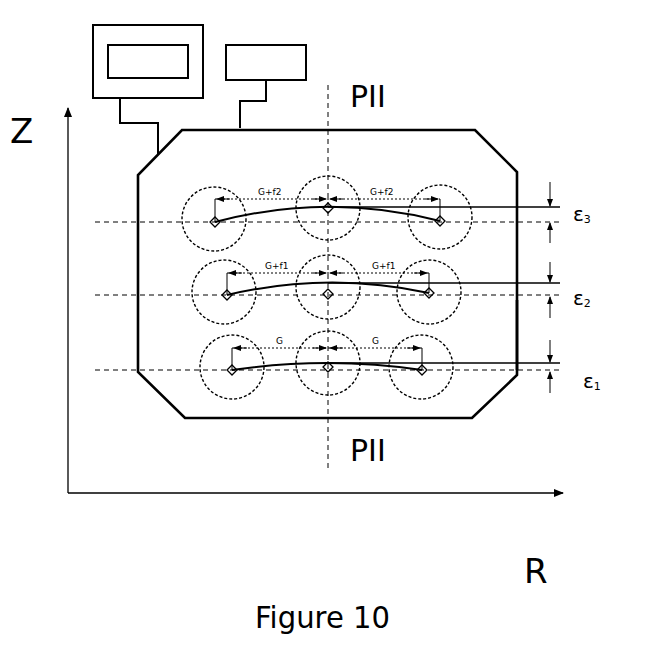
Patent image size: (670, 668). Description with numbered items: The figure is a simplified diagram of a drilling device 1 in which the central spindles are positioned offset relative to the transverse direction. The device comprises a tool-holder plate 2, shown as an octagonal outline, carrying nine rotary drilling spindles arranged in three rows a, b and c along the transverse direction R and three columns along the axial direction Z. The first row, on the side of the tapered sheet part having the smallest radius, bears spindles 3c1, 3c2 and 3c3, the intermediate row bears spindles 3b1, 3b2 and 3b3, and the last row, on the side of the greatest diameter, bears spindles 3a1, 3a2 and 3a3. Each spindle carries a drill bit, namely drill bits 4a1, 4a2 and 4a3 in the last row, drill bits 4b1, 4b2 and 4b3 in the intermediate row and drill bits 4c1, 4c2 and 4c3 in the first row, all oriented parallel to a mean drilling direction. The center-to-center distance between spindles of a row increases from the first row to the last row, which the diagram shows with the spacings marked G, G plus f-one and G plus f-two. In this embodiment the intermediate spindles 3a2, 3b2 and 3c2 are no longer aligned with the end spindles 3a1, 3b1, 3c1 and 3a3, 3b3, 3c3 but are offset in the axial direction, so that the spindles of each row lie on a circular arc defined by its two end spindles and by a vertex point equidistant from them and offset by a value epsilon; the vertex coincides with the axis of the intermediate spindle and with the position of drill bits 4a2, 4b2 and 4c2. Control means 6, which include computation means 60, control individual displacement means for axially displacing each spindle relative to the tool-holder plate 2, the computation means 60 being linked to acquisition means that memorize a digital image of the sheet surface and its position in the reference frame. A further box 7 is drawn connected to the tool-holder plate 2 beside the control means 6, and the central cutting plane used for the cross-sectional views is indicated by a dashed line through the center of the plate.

The drilling device 1 is at (594, 121).
The tool-holder plate 2 is at (518, 322).
The control means 6 is at (93, 33).
The computation means 60 is at (148, 62).
The measuring device 7 is at (266, 86).
The rotary drilling spindle 3a1 is at (196, 191).
The intermediate spindle 3a2 is at (340, 186).
The rotary drilling spindle 3a3 is at (470, 196).
The rotary drilling spindle 3b1 is at (203, 275).
The intermediate spindle 3b2 is at (301, 302).
The rotary drilling spindle 3b3 is at (459, 272).
The rotary drilling spindle 3c1 is at (207, 341).
The intermediate spindle 3c2 is at (301, 383).
The rotary drilling spindle 3c3 is at (450, 346).
The drill bit 4a1 is at (211, 219).
The drill bit 4a2 is at (325, 204).
The drill bit 4a3 is at (466, 193).
The drill bit 4b1 is at (222, 296).
The drill bit 4b2 is at (337, 298).
The drill bit 4b3 is at (434, 291).
The drill bit 4c1 is at (227, 373).
The drill bit 4c2 is at (336, 371).
The drill bit 4c3 is at (433, 376).